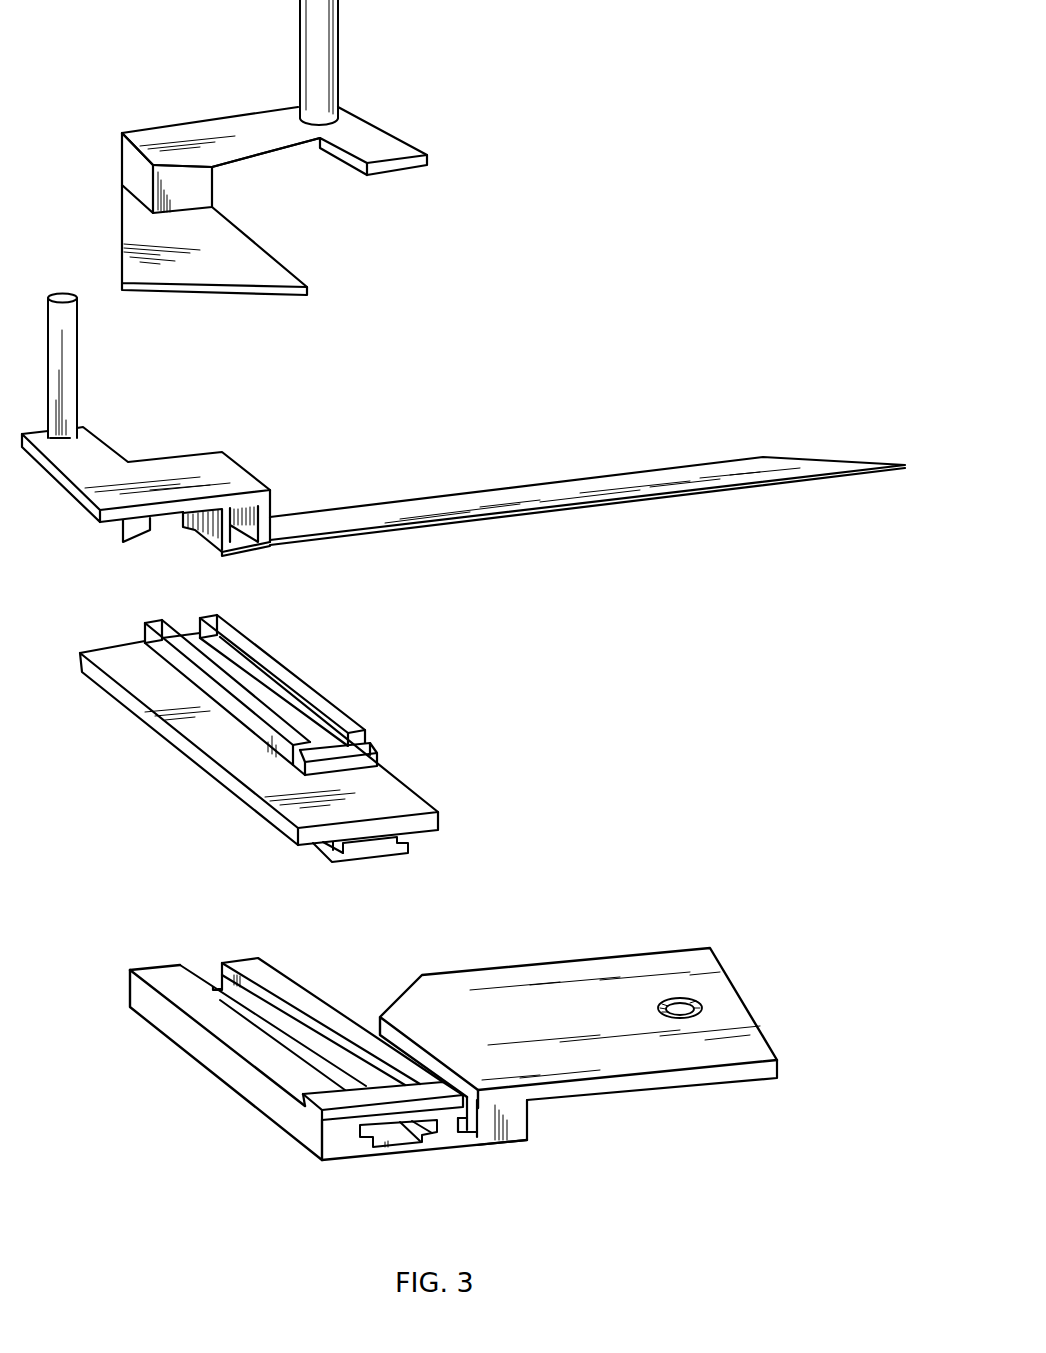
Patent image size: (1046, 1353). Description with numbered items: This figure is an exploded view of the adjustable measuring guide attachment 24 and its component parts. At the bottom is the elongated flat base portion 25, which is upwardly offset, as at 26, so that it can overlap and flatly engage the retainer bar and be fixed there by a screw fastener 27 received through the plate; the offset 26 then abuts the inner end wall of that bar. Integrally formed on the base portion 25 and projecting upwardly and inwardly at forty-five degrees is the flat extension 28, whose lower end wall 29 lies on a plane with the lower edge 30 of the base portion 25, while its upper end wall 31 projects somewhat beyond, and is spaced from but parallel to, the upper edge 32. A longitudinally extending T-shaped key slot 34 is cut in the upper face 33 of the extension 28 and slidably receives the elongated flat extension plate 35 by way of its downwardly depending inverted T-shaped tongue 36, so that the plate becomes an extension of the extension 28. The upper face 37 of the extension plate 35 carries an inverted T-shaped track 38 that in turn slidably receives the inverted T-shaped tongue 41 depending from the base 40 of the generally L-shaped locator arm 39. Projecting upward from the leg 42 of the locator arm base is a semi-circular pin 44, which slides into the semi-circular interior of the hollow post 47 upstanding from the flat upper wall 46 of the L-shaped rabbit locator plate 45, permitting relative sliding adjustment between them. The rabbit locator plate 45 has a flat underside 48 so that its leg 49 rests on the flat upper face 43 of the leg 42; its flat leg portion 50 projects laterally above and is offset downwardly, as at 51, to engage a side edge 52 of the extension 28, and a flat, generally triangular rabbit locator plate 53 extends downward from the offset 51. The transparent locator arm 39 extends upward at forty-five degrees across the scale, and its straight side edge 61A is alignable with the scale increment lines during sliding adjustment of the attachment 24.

The adjustable measuring guide attachment 24 is at (512, 668).
The elongated flat base portion 25 is at (530, 923).
The offset 26 is at (528, 1128).
The screw fastener 27 is at (688, 997).
The flat extension 28 is at (150, 952).
The lower end wall 29 is at (353, 1150).
The lower edge 30 is at (658, 1085).
The upper end wall 31 is at (245, 960).
The upper edge 32 is at (608, 957).
The upper face 33 is at (237, 1043).
The T-shaped key slot 34 is at (310, 1050).
The elongated flat extension plate 35 is at (415, 762).
The inverted T-shaped tongue 36 is at (378, 852).
The upper face 37 is at (213, 743).
The inverted T-shaped track 38 is at (300, 698).
The locator arm 39 is at (382, 487).
The base 40 is at (211, 429).
The inverted T-shaped tongue 41 is at (170, 532).
The leg 42 is at (103, 442).
The flat upper face 43 is at (88, 478).
The semi-circular pin 44 is at (78, 352).
The rabbit locator plate 45 is at (205, 90).
The flat upper wall 46 is at (148, 137).
The hollow post 47 is at (335, 50).
The flat underside 48 is at (285, 152).
The leg 49 is at (393, 147).
The top surface 50 is at (262, 122).
The offset 51 is at (198, 183).
The side edge 52 is at (257, 1097).
The rabbit locator plate 53 is at (243, 287).
The straight side edge 61A is at (665, 498).